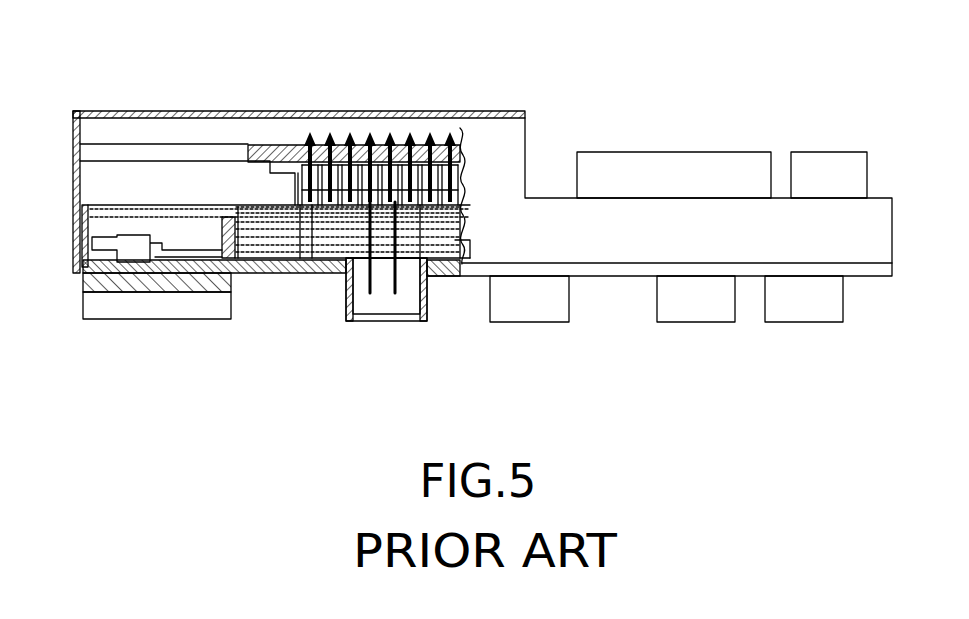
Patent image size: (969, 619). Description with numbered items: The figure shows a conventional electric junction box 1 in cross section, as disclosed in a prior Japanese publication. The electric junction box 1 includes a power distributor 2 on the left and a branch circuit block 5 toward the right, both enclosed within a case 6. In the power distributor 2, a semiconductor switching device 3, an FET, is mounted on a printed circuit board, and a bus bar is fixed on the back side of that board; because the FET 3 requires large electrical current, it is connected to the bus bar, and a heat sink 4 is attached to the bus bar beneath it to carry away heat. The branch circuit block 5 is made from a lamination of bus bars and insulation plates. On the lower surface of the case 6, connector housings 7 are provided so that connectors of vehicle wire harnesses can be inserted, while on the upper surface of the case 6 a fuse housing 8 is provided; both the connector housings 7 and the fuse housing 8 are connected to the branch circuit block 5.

The electric junction box 1 is at (166, 97).
The power distributor 2 is at (78, 305).
The semiconductor switching device 3 is at (82, 245).
The heat sink 4 is at (162, 292).
The branch circuit block 5 is at (460, 250).
The case 6 is at (118, 110).
The connector housings 7 is at (383, 308).
The fuse housing 8 is at (670, 150).